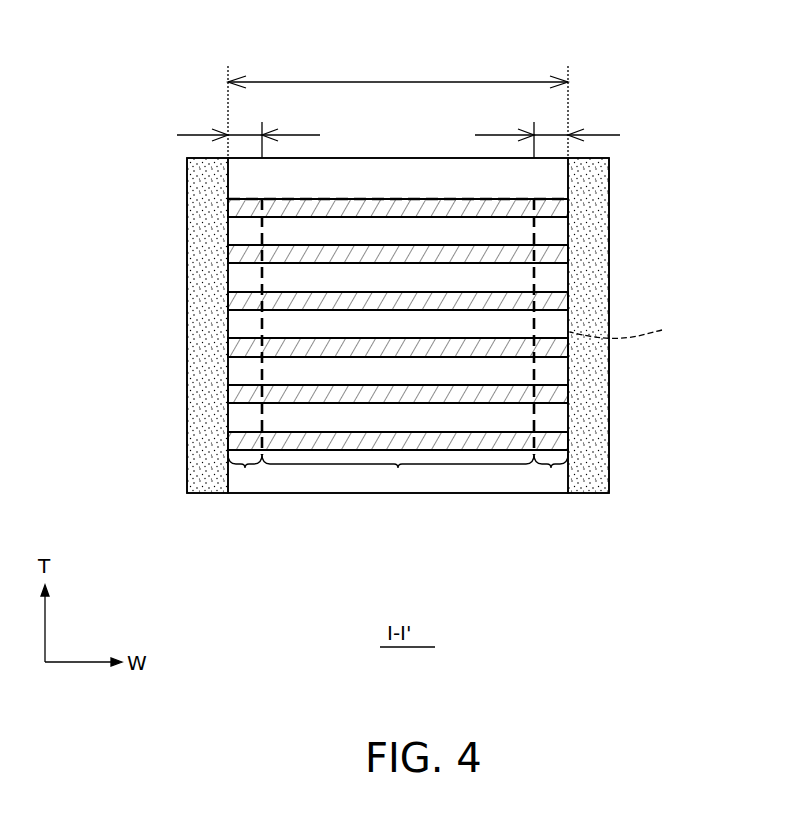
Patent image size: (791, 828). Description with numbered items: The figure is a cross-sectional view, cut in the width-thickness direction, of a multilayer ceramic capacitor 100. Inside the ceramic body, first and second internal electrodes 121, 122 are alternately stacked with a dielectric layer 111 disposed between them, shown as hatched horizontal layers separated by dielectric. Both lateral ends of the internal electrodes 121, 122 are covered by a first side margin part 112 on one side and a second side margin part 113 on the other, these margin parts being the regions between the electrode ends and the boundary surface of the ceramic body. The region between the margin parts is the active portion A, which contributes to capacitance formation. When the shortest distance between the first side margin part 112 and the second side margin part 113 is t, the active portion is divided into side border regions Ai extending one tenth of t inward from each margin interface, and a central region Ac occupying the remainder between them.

The multilayer ceramic capacitor 100 is at (408, 30).
The dielectric layer 111 is at (552, 232).
The first side margin part 112 is at (203, 478).
The second side margin part 113 is at (592, 477).
The first internal electrode 121 is at (555, 208).
The second internal electrode 122 is at (555, 252).